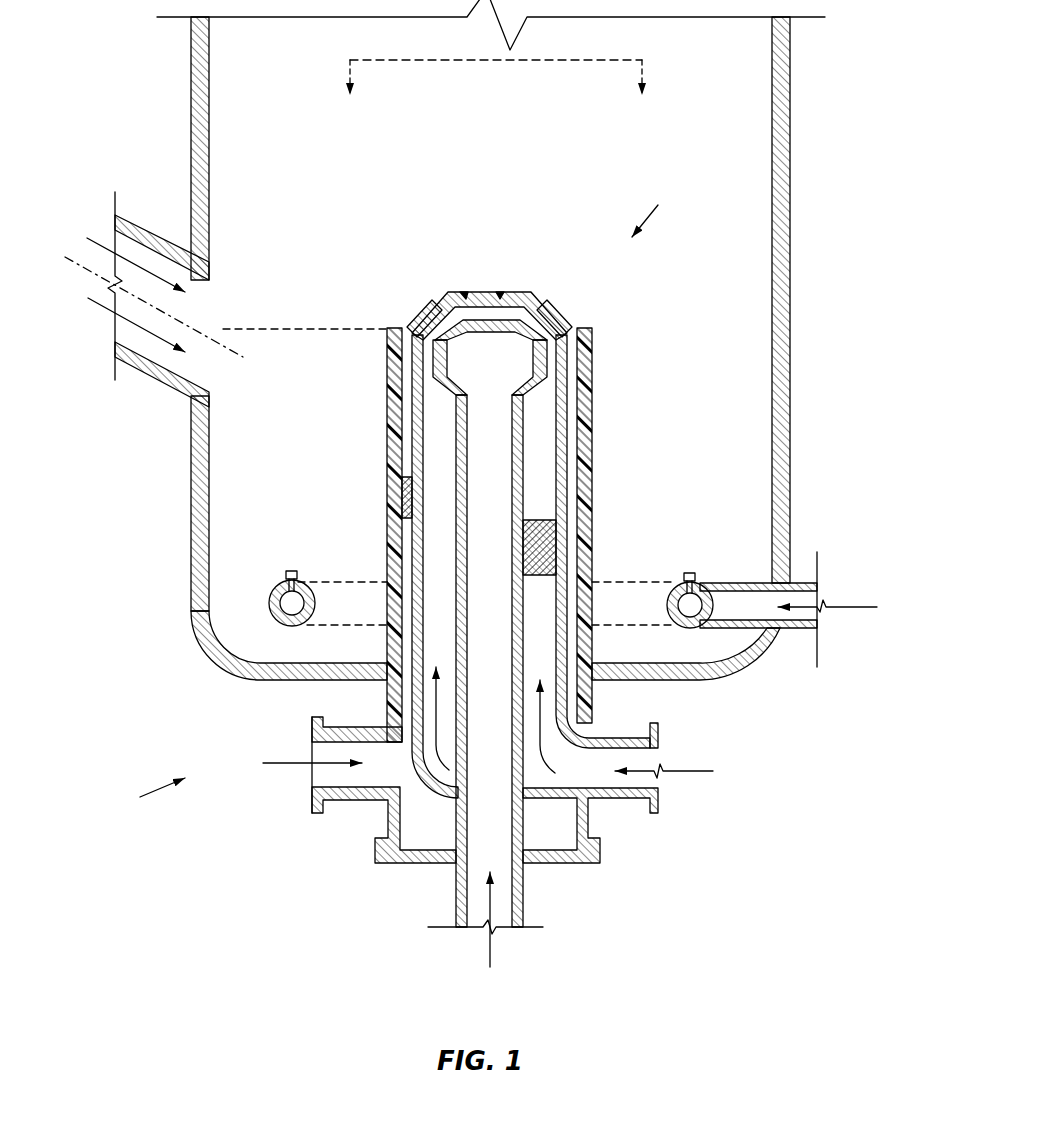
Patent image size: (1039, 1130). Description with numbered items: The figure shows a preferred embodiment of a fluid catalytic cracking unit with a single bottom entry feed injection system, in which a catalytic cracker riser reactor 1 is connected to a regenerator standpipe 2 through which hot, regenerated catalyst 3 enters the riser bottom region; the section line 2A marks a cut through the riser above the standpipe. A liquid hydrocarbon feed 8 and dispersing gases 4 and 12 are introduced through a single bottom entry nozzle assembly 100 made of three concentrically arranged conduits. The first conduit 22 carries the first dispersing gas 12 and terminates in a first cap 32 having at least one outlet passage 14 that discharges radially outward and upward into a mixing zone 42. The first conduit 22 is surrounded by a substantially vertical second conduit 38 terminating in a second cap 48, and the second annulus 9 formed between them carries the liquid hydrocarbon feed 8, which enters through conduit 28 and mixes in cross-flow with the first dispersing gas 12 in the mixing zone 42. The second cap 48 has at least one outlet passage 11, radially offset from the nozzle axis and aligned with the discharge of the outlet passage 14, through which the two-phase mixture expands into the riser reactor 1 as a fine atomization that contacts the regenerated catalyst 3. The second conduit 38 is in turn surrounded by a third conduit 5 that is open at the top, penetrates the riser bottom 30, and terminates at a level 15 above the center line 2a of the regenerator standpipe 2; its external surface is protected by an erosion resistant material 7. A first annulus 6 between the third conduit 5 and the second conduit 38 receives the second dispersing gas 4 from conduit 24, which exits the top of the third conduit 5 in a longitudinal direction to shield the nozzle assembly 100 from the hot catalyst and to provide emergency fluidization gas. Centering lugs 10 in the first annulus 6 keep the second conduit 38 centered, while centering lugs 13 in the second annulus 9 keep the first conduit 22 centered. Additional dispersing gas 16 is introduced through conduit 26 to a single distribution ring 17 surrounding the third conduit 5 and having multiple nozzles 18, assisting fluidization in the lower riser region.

The catalytic cracker riser reactor 1 is at (210, 173).
The regenerator standpipe 2 is at (158, 238).
The center line of regenerator standpipe 2a is at (190, 325).
The regenerated catalyst 3 is at (88, 238).
The second dispersing gas 4 is at (292, 760).
The third conduit 5 is at (387, 694).
The first annulus 6 is at (571, 678).
The erosion resistant material 7 is at (591, 399).
The liquid hydrocarbon feed 8 is at (687, 770).
The second annulus 9 is at (538, 470).
The centering lugs 10 is at (405, 490).
The outlet passage 11 is at (422, 312).
The first dispersing gas 12 is at (490, 953).
The centering lugs 13 is at (538, 547).
The outlet passage 14 is at (530, 334).
The level 15 is at (265, 327).
The additional dispersing gas 16 is at (830, 600).
The distribution ring 17 is at (292, 603).
The nozzles 18 is at (300, 568).
The first conduit 22 is at (455, 878).
The conduit 24 is at (355, 800).
The conduit 26 is at (793, 582).
The conduit 28 is at (612, 802).
The riser bottom 30 is at (262, 676).
The first cap 32 is at (488, 327).
The second conduit 38 is at (567, 465).
The mixing zone 42 is at (430, 310).
The second cap 48 is at (465, 296).
The nozzle assembly 100 is at (394, 495).
The section line 2A is at (492, 94).